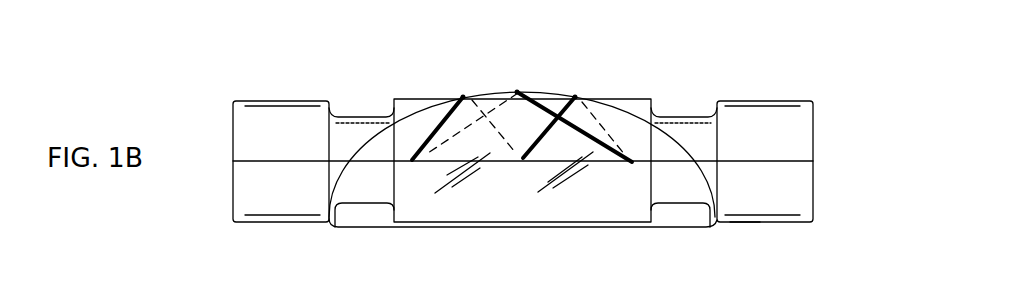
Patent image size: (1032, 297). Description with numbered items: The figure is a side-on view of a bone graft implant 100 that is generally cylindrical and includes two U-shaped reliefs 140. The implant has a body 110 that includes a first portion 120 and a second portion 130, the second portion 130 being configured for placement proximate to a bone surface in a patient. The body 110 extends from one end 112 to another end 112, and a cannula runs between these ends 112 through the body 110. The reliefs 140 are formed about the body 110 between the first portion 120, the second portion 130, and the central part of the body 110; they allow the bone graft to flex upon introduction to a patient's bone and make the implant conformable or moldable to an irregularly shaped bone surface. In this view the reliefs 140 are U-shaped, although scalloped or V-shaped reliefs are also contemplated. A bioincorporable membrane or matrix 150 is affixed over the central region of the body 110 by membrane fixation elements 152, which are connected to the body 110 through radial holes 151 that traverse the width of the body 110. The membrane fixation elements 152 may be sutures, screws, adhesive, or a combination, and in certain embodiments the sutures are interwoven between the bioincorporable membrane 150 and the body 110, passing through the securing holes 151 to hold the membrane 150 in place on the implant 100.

The bone graft implant 100 is at (836, 56).
The body 110 is at (813, 130).
The end 112 is at (232, 188).
The first portion 120 is at (232, 117).
The second portion 130 is at (750, 222).
The U-shaped reliefs 140 is at (347, 117).
The bioincorporable membrane 150 is at (358, 228).
The radial holes 151 is at (412, 160).
The membrane fixation elements 152 is at (444, 120).